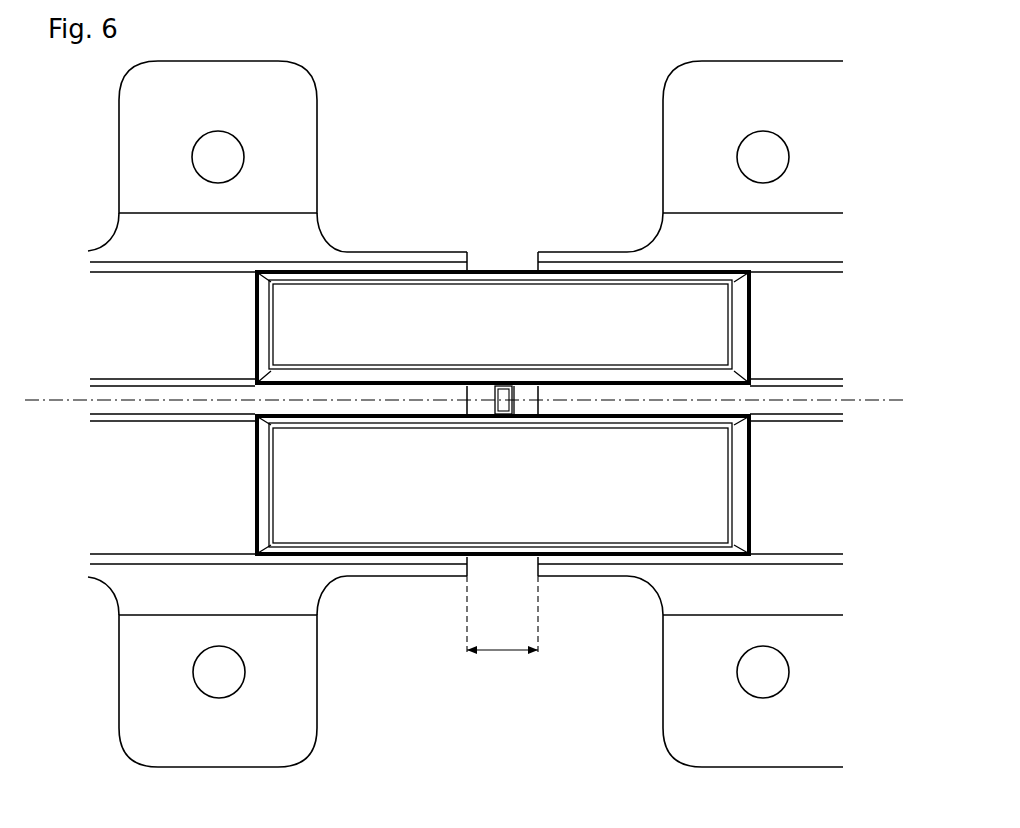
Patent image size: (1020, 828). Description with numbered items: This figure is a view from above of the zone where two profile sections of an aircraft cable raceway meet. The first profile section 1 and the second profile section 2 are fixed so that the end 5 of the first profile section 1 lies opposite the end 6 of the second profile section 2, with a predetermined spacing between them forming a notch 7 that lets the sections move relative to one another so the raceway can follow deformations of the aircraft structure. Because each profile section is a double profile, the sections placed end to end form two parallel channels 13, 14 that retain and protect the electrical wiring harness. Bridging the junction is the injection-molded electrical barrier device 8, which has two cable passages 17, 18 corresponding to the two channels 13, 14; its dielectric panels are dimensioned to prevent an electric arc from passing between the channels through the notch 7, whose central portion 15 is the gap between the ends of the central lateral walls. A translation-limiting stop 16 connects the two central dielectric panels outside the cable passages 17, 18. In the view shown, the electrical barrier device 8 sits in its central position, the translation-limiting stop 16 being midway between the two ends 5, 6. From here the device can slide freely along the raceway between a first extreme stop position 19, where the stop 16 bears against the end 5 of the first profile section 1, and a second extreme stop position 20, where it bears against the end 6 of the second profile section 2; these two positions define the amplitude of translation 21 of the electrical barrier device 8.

The first profile section 1 is at (363, 186).
The second profile section 2 is at (627, 188).
The end of the first profile section 5 is at (469, 252).
The end of the second profile section 6 is at (539, 252).
The notch 7 is at (500, 265).
The electrical barrier device 8 is at (660, 302).
The channel 13 is at (443, 485).
The channel 14 is at (443, 282).
The central portion of the notch 15 is at (516, 412).
The translation-limiting stop 16 is at (500, 414).
The cable passage 17 is at (596, 494).
The cable passage 18 is at (646, 340).
The first extreme stop position 19 is at (467, 598).
The second extreme stop position 20 is at (540, 598).
The amplitude of translation 21 is at (502, 639).